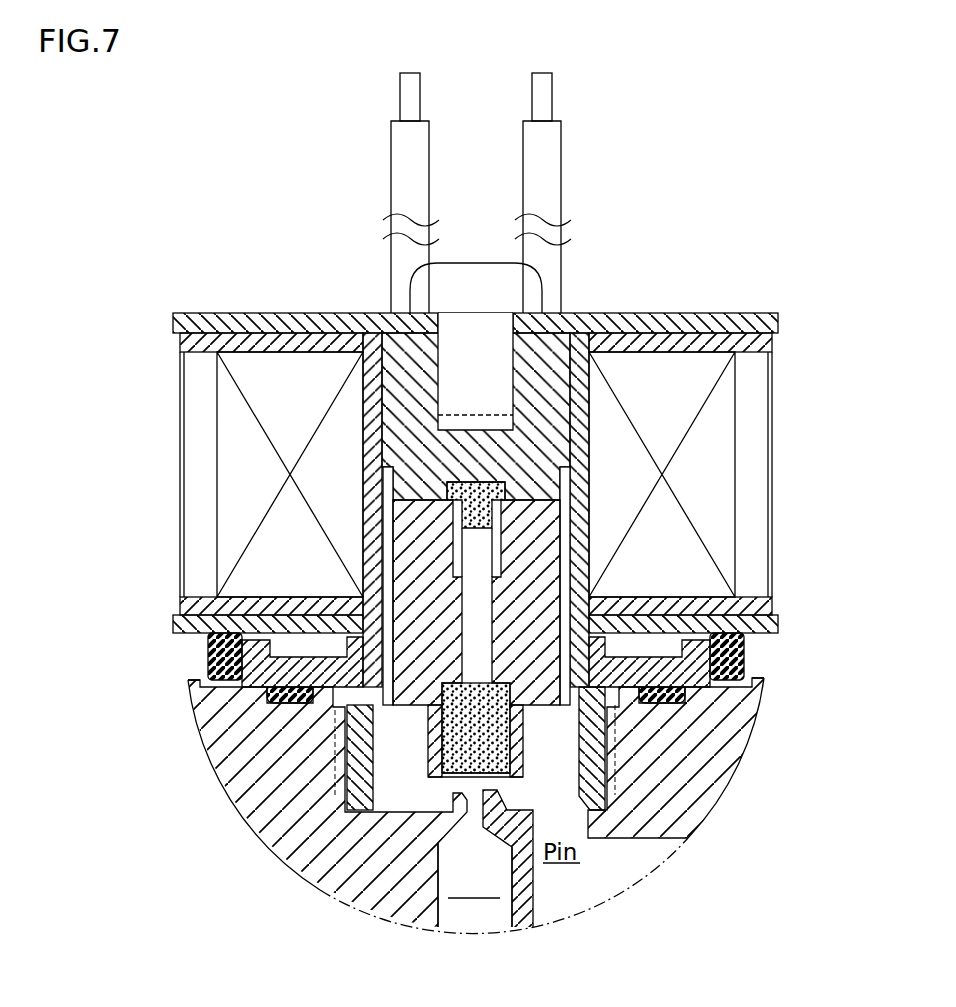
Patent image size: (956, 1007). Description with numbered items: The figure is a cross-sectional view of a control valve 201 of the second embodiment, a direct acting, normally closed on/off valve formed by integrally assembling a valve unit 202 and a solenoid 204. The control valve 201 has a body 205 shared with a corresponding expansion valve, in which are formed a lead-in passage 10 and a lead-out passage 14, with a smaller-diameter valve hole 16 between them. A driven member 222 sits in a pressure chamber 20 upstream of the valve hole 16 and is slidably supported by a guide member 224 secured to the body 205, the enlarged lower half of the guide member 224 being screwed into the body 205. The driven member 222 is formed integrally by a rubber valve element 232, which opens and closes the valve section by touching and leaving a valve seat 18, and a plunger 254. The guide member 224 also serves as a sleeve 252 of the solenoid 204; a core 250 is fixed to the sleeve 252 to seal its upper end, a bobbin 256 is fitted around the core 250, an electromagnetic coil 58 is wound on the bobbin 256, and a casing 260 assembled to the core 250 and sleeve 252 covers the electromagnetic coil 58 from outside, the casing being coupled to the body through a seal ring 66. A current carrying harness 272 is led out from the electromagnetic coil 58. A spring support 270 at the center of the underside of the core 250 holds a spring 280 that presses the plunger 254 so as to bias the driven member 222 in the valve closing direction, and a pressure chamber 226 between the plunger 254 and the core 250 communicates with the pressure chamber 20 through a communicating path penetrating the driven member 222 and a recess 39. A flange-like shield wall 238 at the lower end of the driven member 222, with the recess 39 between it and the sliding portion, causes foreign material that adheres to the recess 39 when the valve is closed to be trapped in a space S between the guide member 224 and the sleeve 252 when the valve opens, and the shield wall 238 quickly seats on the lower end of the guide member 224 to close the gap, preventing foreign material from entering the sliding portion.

The lead-in passage 10 is at (592, 884).
The lead-out passage 14 is at (480, 903).
The valve hole 16 is at (455, 845).
The valve seat 18 is at (432, 775).
The pressure chamber 20 is at (553, 758).
The recess 39 is at (330, 683).
The electromagnetic coil 58 is at (240, 452).
The seal ring 66 is at (212, 653).
The control valve 201 is at (692, 201).
The valve unit 202 is at (771, 664).
The solenoid 204 is at (710, 301).
The body 205 is at (728, 771).
The driven member 222 is at (390, 593).
The guide member 224 is at (340, 617).
The pressure chamber 226 is at (393, 505).
The valve element 232 is at (355, 748).
The shield wall 238 is at (300, 695).
The core 250 is at (588, 415).
The sleeve 252 is at (388, 560).
The plunger 254 is at (520, 537).
The bobbin 256 is at (363, 432).
The casing 260 is at (780, 325).
The spring support 270 is at (588, 488).
The current carrying harness 272 is at (523, 168).
The spring 280 is at (505, 512).
The space S is at (180, 608).